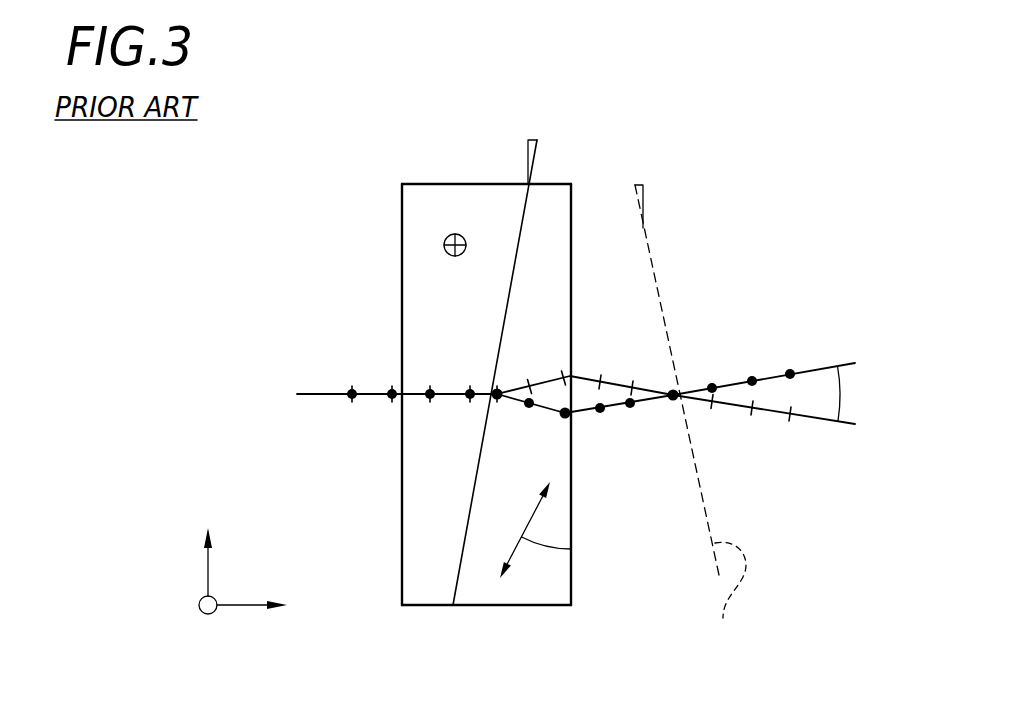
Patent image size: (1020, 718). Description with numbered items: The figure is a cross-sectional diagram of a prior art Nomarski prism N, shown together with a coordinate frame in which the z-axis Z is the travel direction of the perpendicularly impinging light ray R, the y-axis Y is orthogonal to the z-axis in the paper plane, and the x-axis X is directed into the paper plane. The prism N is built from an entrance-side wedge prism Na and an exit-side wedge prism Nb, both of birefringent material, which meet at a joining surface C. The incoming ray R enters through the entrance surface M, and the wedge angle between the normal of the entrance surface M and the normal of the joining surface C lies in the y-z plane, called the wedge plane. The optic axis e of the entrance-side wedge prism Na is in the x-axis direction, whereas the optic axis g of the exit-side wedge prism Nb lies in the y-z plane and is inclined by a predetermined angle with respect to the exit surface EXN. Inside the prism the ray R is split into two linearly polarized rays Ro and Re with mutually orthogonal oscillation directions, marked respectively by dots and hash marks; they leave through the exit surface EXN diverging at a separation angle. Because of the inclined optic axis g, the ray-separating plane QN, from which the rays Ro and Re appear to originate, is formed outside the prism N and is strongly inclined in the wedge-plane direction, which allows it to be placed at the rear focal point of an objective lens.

The Nomarski prism N is at (325, 212).
The entrance-side wedge prism Na is at (467, 192).
The exit-side wedge prism Nb is at (557, 193).
The joining surface C is at (460, 556).
The ray-separating plane QN is at (729, 603).
The optic axis of entrance-side wedge prism e is at (444, 246).
The light ray R is at (377, 395).
The ordinary linearly polarized light ray Ro is at (790, 372).
The extraordinary linearly polarized light ray Re is at (792, 418).
The optic axis of exit-side wedge prism g is at (518, 548).
The entrance surface M is at (402, 572).
The exit surface EXN is at (572, 595).
The x-axis X is at (194, 619).
The y-axis Y is at (208, 544).
The z-axis Z is at (267, 609).